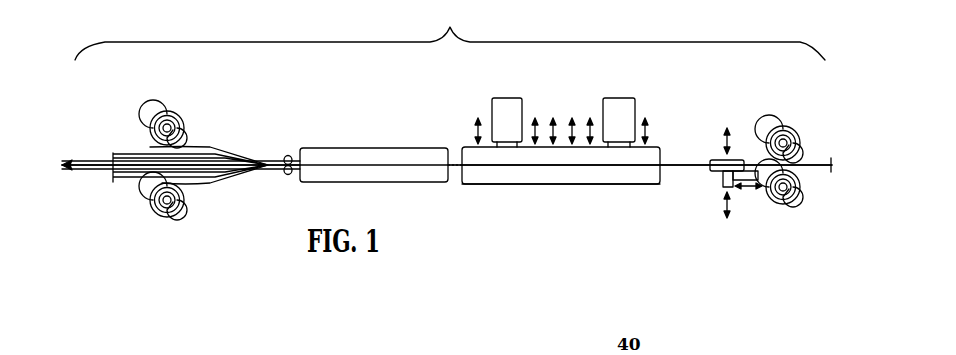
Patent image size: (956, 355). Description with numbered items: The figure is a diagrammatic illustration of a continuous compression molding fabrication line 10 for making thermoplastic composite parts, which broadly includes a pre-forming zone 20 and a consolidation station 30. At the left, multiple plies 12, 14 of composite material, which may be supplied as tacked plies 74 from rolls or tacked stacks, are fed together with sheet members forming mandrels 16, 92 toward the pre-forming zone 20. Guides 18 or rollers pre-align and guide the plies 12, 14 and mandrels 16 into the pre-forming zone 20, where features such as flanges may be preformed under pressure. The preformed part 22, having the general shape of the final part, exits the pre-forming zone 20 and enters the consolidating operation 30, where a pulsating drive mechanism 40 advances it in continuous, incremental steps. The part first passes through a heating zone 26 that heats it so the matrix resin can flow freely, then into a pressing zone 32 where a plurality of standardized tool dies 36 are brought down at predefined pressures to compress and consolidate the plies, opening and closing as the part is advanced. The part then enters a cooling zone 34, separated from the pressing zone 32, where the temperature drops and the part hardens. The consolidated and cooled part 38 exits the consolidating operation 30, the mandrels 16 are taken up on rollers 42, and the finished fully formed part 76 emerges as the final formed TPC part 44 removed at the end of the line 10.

The CCM fabrication line 10 is at (450, 31).
The composite material ply 12 is at (78, 156).
The composite material ply 14 is at (113, 153).
The mandrel 16 is at (150, 118).
The guides 18 is at (288, 156).
The pre-forming zone 20 is at (356, 130).
The preformed part 22 is at (455, 162).
The heating zone 26 is at (505, 176).
The consolidation station 30 is at (553, 97).
The pressing zone 32 is at (573, 185).
The cooling zone 34 is at (628, 185).
The standardized tool dies 36 is at (582, 156).
The consolidated and cooled part 38 is at (695, 170).
The pulsating drive mechanism 40 is at (738, 158).
The rollers 42 is at (783, 128).
The final formed TPC part 44 is at (812, 158).
The tacked plies 74 is at (113, 182).
The finished fully formed part 76 is at (78, 173).
The mandrel 92 is at (152, 214).